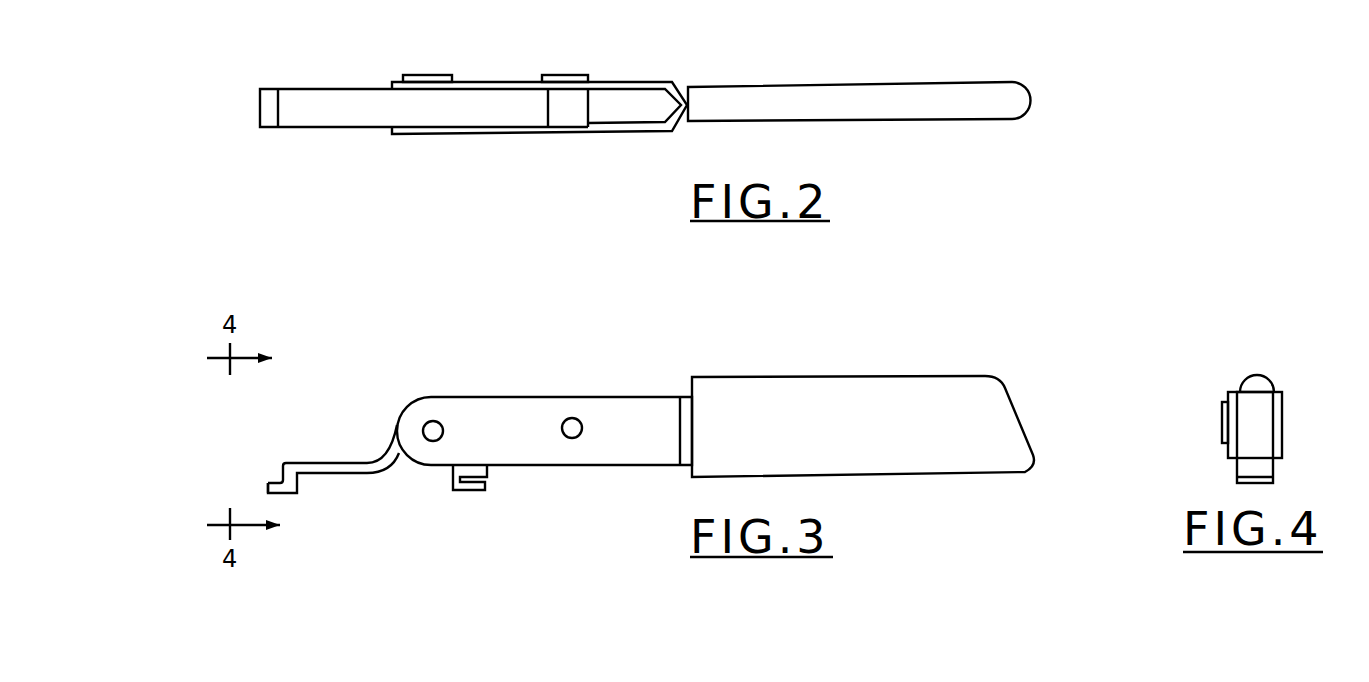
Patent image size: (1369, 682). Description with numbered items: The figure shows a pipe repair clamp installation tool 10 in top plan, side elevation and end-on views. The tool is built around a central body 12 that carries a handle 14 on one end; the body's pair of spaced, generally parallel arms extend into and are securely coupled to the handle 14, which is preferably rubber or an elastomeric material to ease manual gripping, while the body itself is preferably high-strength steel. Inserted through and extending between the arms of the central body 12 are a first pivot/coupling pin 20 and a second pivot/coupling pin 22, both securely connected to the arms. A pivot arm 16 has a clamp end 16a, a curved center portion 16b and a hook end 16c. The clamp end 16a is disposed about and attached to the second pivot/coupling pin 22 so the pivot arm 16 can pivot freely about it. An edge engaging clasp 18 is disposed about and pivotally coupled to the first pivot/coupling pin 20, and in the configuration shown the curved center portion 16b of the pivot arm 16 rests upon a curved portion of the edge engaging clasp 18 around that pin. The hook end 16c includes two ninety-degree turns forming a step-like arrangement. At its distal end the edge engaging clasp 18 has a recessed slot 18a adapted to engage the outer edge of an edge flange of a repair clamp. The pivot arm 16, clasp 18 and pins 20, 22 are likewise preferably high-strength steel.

In FIG. 2, the repair clamp installation tool 10 is at (635, 107).
In FIG. 3, the repair clamp installation tool 10 is at (623, 412).
In FIG. 4, the repair clamp installation tool 10 is at (1214, 376).
In FIG. 2, the central body 12 is at (633, 82).
In FIG. 3, the central body 12 is at (498, 397).
In FIG. 4, the central body 12 is at (1255, 425).
In FIG. 2, the handle 14 is at (848, 83).
In FIG. 3, the handle 14 is at (865, 439).
In FIG. 4, the handle 14 is at (1263, 382).
In FIG. 2, the pivot arm 16 is at (414, 107).
In FIG. 3, the pivot arm 16 is at (305, 435).
In FIG. 4, the pivot arm 16 is at (1184, 443).
In FIG. 2, the clamp end 16a is at (563, 108).
In FIG. 2, the curved center portion 16b is at (378, 110).
In FIG. 2, the hook end 16c is at (267, 128).
In FIG. 3, the hook end 16c is at (282, 482).
In FIG. 4, the hook end 16c is at (1237, 478).
In FIG. 3, the edge engaging clasp 18 is at (455, 492).
In FIG. 3, the recessed slot 18a is at (477, 478).
In FIG. 2, the first pivot/coupling pin 20 is at (425, 77).
In FIG. 3, the first pivot/coupling pin 20 is at (430, 422).
In FIG. 4, the first pivot/coupling pin 20 is at (1223, 417).
In FIG. 2, the second pivot/coupling pin 22 is at (560, 75).
In FIG. 3, the second pivot/coupling pin 22 is at (577, 425).